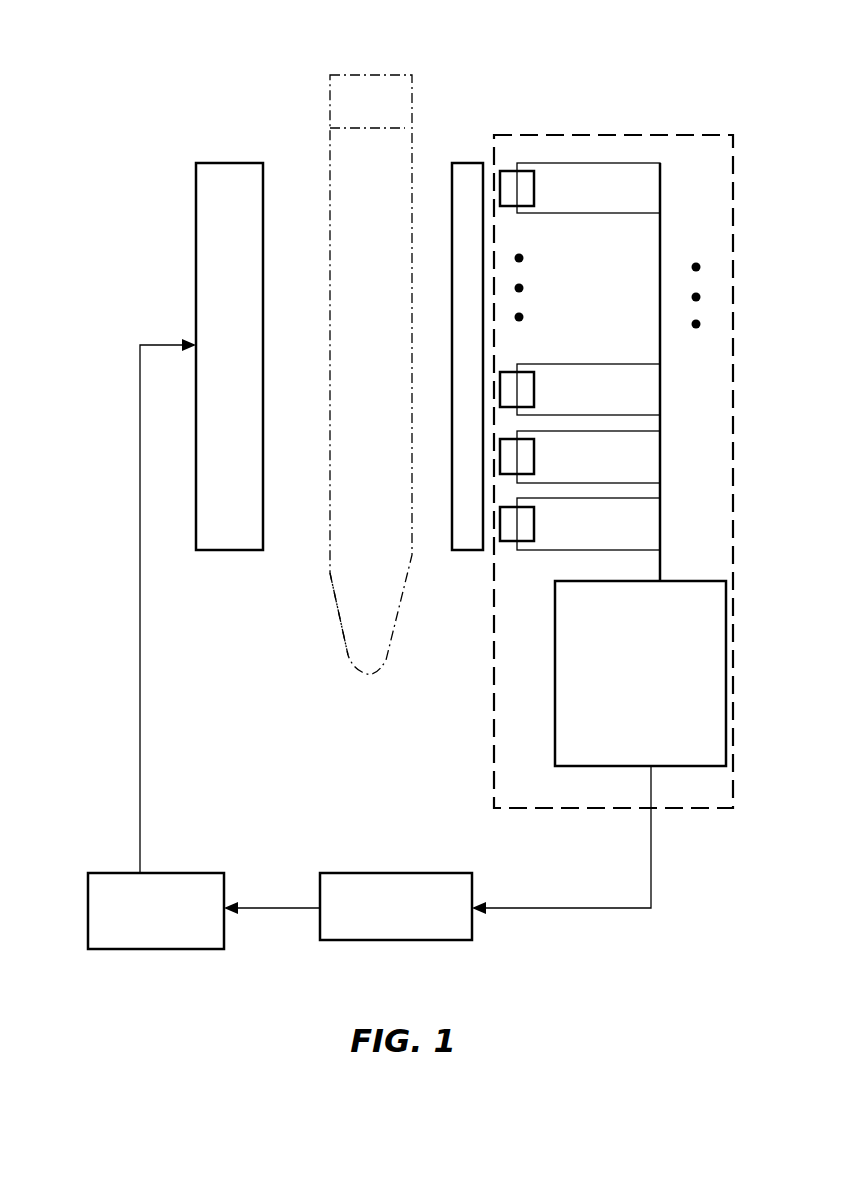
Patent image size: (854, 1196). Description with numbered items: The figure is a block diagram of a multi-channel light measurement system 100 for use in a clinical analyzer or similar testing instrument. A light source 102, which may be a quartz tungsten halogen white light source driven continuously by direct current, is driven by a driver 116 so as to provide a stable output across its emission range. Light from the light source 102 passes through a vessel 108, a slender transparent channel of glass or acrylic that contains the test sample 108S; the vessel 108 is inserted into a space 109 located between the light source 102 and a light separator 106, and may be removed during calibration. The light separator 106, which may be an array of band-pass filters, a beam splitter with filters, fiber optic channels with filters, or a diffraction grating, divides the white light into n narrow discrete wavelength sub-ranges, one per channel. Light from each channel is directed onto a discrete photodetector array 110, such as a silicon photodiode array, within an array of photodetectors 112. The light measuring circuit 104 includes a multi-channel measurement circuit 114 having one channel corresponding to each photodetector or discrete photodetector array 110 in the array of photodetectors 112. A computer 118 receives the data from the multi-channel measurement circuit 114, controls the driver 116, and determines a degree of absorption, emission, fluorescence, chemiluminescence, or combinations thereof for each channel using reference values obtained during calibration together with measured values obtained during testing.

The multi-channel light measurement system 100 is at (140, 262).
The light source 102 is at (238, 163).
The light measuring circuit 104 is at (638, 133).
The light separator 106 is at (469, 163).
The vessel 108 is at (405, 75).
The test sample 108S is at (370, 127).
The space 109 is at (312, 592).
The discrete photodetector array 110 is at (512, 190).
The array of photodetectors 112 is at (517, 578).
The multi-channel measurement circuit 114 is at (726, 673).
The driver 116 is at (157, 949).
The computer 118 is at (369, 940).